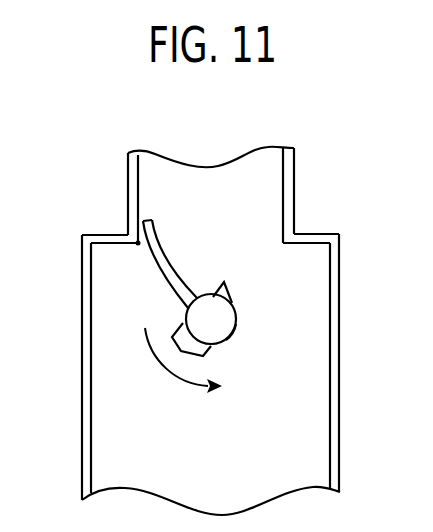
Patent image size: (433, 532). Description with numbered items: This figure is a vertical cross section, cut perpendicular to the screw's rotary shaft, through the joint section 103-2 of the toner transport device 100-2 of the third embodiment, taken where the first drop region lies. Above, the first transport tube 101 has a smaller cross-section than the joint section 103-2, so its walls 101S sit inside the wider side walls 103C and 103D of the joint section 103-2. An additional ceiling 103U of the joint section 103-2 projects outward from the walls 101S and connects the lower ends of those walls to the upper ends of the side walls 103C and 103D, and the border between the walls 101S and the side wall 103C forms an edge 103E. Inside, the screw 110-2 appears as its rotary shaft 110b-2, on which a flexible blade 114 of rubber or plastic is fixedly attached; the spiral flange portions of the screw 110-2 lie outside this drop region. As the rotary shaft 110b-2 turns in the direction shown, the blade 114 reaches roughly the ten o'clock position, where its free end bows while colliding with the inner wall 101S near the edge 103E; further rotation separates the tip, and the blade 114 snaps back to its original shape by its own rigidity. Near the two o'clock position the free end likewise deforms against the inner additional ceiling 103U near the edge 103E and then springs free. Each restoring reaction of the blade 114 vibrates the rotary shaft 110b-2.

The toner transport device 100-2 is at (96, 133).
The first transport tube 101 is at (294, 185).
The walls of the first transport tube 101S is at (138, 185).
The joint section 103-2 is at (346, 320).
The additional ceiling 103U is at (309, 244).
The edge 103E is at (138, 244).
The side wall of the joint section 103C is at (82, 412).
The side wall of the joint section 103D is at (339, 412).
The flexible blade 114 is at (172, 271).
The screw 110-2 is at (241, 306).
The rotary shaft 110b-2 is at (233, 331).